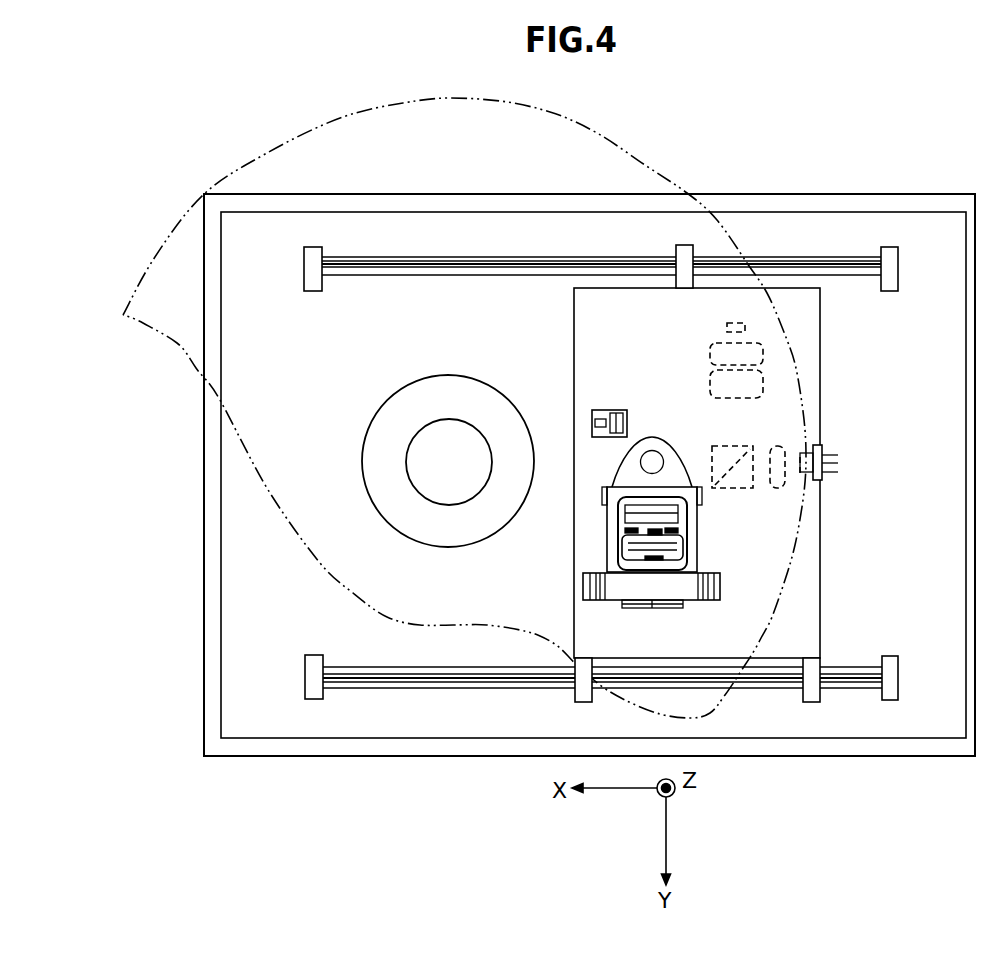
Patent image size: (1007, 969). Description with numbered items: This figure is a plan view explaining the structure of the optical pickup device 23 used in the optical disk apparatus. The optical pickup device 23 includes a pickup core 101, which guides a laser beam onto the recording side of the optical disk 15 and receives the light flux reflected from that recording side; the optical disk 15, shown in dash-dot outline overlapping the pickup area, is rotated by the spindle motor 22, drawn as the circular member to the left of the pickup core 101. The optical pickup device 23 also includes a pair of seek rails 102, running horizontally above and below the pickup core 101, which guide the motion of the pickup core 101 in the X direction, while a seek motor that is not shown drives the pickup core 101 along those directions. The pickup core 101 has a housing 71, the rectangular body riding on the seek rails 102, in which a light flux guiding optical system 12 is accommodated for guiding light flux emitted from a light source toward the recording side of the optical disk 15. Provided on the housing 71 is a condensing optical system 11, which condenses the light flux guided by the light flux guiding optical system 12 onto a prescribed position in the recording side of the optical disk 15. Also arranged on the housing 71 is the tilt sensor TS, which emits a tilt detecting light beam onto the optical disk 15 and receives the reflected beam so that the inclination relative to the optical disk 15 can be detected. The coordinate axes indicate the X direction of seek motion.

The optical disk 15 is at (623, 145).
The optical pickup device 23 is at (878, 164).
The seek rails 102 is at (773, 258).
The pickup core 101 is at (695, 473).
The housing 71 is at (820, 373).
The spindle motor 22 is at (450, 375).
The tilt sensor TS is at (610, 410).
The condensing optical system 11 is at (709, 526).
The light flux guiding optical system 12 is at (760, 506).